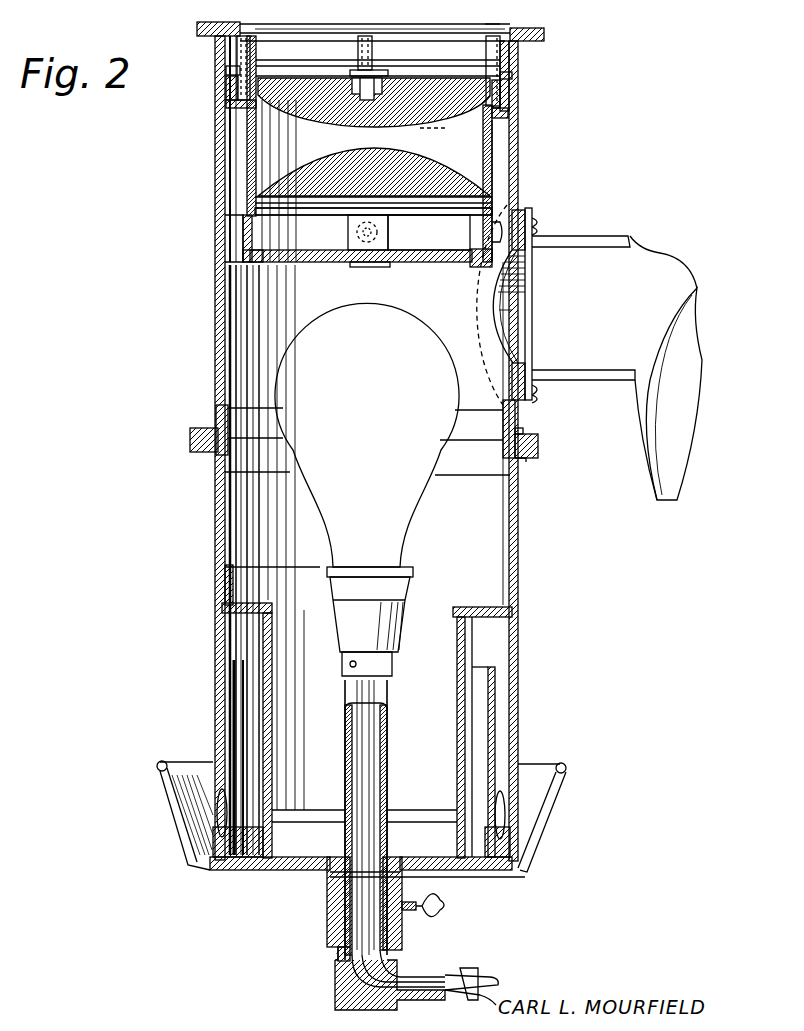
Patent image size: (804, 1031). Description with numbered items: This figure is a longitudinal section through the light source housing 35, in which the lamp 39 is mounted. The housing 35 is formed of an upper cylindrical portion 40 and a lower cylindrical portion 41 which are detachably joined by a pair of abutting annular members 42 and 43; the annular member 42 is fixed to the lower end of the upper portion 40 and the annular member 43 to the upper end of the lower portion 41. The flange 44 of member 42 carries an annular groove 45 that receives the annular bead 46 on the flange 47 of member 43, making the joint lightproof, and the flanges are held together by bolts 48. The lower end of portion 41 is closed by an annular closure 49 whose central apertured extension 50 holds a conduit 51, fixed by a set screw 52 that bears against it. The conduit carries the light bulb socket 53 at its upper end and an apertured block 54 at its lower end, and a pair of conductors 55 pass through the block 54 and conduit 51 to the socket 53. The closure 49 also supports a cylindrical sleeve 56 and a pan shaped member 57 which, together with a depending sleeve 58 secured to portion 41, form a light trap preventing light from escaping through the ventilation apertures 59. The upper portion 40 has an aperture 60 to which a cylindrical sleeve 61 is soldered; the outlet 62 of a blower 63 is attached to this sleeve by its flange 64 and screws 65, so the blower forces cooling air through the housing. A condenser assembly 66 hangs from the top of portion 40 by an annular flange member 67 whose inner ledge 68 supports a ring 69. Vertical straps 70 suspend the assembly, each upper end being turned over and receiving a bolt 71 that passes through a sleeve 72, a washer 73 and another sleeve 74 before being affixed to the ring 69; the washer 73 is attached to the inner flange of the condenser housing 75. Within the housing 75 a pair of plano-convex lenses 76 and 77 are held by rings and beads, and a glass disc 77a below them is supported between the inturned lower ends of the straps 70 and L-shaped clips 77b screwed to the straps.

The housing 35 is at (212, 392).
The lamp 39 is at (328, 328).
The upper cylindrical portion 40 is at (240, 257).
The lower cylindrical portion 41 is at (215, 527).
The annular member 42 is at (480, 418).
The annular member 43 is at (480, 470).
The flange 44 is at (522, 432).
The annular groove 45 is at (540, 446).
The annular bead 46 is at (203, 428).
The flange 47 is at (192, 440).
The bolts 48 is at (522, 460).
The annular closure 49 is at (361, 840).
The apertured extension 50 is at (403, 933).
The conduit 51 is at (388, 776).
The set screw 52 is at (432, 904).
The light bulb socket 53 is at (395, 612).
The apertured block 54 is at (338, 982).
The conductors 55 is at (462, 978).
The cylindrical sleeve 56 is at (478, 668).
The pan shaped member 57 is at (542, 830).
The depending sleeve 58 is at (367, 730).
The ventilation apertures 59 is at (205, 770).
The aperture 60 is at (492, 318).
The cylindrical sleeve 61 is at (520, 212).
The outlet 62 is at (615, 265).
The blower 63 is at (668, 458).
The flange 64 is at (533, 212).
The screws 65 is at (540, 228).
The condenser assembly 66 is at (490, 160).
The annular flange member 67 is at (527, 76).
The annular inner ledge 68 is at (510, 30).
The ring 69 is at (492, 28).
The vertical straps 70 is at (355, 266).
The bolt 71 is at (240, 114).
The sleeve 72 is at (228, 86).
The washer 73 is at (228, 72).
The sleeve 74 is at (235, 60).
The condenser housing 75 is at (490, 145).
The plano-convex lens 76 is at (333, 200).
The plano-convex lens 77 is at (332, 128).
The glass disc 77a is at (428, 258).
The L-shaped clips 77b is at (243, 246).